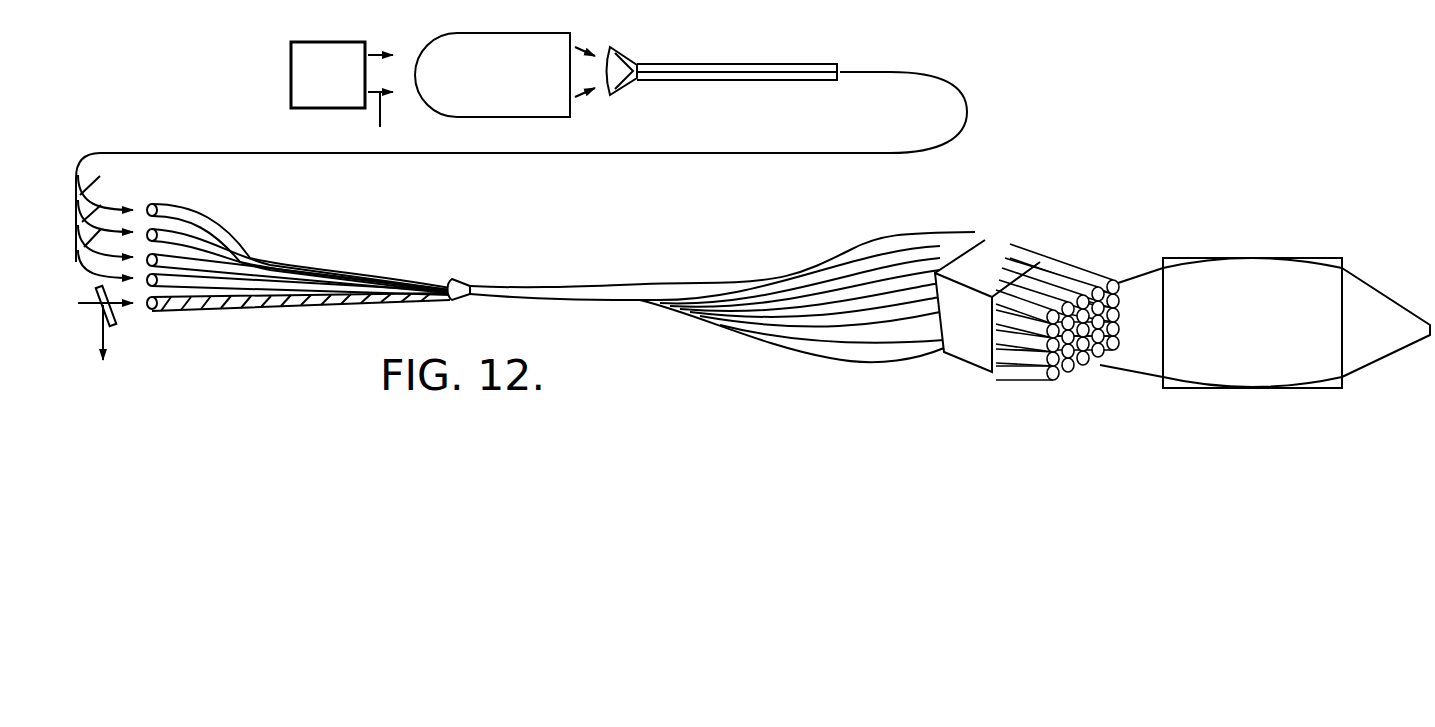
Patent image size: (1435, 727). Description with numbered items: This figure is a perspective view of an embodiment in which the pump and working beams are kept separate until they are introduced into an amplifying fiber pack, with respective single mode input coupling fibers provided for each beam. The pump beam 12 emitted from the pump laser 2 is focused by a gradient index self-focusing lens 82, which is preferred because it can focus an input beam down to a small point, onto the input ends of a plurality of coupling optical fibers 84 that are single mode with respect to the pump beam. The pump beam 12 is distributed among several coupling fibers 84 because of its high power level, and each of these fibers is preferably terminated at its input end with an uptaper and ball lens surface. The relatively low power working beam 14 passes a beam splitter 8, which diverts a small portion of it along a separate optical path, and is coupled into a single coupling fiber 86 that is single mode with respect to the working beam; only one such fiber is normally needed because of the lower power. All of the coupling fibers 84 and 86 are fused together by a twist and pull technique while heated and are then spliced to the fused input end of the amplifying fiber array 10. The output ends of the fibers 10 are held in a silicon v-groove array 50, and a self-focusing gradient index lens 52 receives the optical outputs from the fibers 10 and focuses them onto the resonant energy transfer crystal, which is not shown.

The pump laser 2 is at (300, 108).
The pump beam 12 is at (371, 116).
The gradient index self-focusing lens 82 is at (452, 112).
The coupling optical fibers 84 is at (678, 80).
The coupling fiber 86 is at (238, 313).
The beam splitter 8 is at (113, 310).
The working beam 14 is at (93, 306).
The amplifying fiber array 10 is at (803, 257).
The silicon v-groove array 50 is at (1040, 242).
The self-focusing gradient index lens 52 is at (1302, 262).